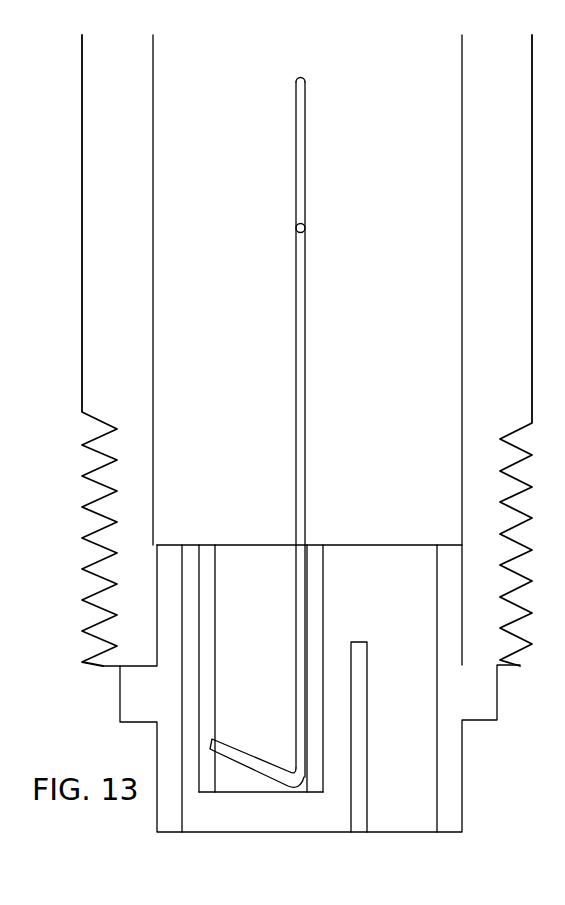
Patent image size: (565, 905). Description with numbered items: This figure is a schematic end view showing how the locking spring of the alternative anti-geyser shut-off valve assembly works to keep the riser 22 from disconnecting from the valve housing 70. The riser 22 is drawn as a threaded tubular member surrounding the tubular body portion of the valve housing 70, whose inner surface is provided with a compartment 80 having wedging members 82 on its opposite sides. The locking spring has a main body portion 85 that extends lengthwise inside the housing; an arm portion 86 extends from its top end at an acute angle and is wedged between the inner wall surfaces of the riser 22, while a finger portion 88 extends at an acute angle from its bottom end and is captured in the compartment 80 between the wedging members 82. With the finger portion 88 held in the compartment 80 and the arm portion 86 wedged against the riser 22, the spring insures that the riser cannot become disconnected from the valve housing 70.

The riser 22 is at (510, 170).
The valve housing 70 is at (463, 747).
The compartment 80 is at (260, 788).
The wedging member 82 is at (205, 572).
The main body portion 85 is at (303, 347).
The arm portion 86 is at (298, 153).
The finger portion 88 is at (236, 752).